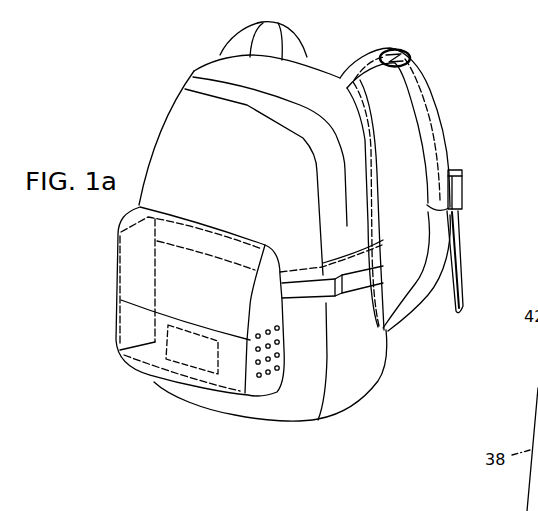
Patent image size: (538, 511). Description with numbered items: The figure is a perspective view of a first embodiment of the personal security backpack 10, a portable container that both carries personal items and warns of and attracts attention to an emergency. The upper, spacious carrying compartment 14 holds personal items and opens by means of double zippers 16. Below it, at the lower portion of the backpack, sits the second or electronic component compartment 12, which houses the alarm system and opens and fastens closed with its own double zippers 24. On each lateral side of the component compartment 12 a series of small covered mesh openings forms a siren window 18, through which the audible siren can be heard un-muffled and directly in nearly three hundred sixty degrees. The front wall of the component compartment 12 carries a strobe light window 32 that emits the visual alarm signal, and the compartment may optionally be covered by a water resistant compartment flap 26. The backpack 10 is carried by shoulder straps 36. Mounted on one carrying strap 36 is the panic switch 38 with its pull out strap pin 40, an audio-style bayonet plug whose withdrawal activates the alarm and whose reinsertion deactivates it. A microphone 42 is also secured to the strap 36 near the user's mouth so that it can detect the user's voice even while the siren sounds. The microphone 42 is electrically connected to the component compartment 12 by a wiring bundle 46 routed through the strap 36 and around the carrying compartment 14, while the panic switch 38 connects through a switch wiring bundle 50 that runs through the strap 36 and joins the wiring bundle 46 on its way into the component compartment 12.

The personal security backpack 10 is at (114, 79).
The component compartment 12 is at (275, 396).
The carrying compartment 14 is at (196, 71).
The double zippers 16 is at (347, 229).
The siren window 18 is at (117, 312).
The double zippers 24 is at (282, 312).
The compartment flap 26 is at (116, 352).
The strobe light window 32 is at (187, 364).
The shoulder strap 36 is at (371, 50).
The panic switch 38 is at (464, 192).
The pull out strap pin 40 is at (466, 272).
The microphone 42 is at (407, 53).
The wiring bundle 46 is at (372, 145).
The switch wiring bundle 50 is at (437, 110).